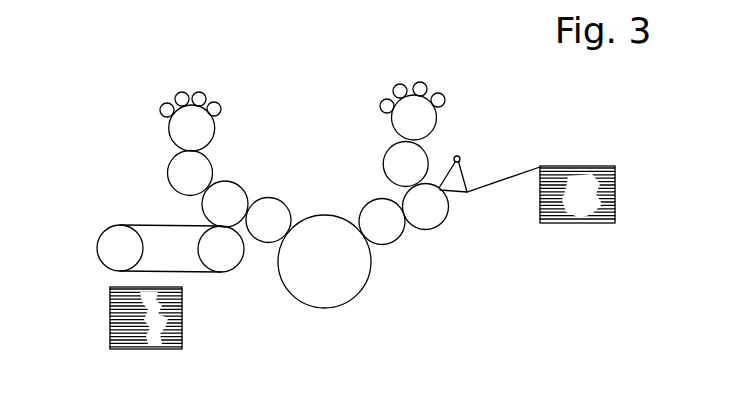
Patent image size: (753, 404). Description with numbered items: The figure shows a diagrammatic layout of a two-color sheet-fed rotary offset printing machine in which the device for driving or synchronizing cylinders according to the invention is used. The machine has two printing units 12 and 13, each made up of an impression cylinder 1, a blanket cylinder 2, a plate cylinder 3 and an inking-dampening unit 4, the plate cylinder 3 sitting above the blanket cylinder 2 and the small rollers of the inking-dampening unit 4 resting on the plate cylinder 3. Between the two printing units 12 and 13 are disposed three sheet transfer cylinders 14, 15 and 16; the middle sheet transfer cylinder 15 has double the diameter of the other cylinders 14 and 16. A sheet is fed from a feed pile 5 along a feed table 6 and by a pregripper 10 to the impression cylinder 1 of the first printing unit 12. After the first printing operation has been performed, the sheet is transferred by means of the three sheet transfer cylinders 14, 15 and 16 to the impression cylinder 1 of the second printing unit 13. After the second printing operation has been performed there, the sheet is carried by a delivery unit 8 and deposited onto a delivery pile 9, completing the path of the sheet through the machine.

The impression cylinder 1 is at (232, 200).
The blanket cylinder 2 is at (180, 173).
The plate cylinder 3 is at (181, 128).
The inking-dampening unit 4 is at (199, 97).
The feed pile 5 is at (582, 182).
The feed table 6 is at (520, 168).
The delivery unit 8 is at (118, 232).
The delivery pile 9 is at (110, 317).
The pregripper 10 is at (465, 175).
The first printing unit 12 is at (449, 136).
The second printing unit 13 is at (226, 147).
The sheet transfer cylinder 14 is at (388, 235).
The middle sheet transfer cylinder 15 is at (323, 295).
The sheet transfer cylinder 16 is at (267, 232).